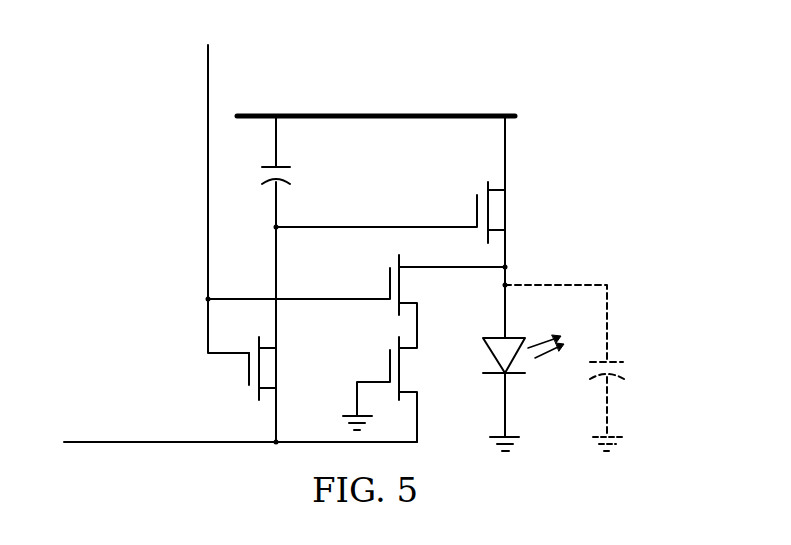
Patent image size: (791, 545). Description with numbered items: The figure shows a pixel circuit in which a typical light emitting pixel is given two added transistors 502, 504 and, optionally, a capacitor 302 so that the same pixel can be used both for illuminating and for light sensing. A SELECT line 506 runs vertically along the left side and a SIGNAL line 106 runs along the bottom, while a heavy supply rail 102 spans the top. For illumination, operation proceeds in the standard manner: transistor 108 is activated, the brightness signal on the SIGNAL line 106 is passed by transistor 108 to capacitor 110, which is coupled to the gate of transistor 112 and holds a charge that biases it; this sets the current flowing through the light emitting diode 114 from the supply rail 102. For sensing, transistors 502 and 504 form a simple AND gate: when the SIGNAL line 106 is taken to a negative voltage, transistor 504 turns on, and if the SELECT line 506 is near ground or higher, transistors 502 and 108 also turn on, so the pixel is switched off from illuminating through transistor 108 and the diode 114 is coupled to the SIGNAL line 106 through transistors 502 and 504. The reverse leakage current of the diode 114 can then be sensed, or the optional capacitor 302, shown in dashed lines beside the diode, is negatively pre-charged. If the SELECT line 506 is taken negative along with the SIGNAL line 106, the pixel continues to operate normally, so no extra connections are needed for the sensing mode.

The supply rail 102 is at (487, 115).
The signal line 106 is at (89, 443).
The transistor 108 is at (273, 367).
The capacitor 110 is at (300, 176).
The transistor 112 is at (503, 213).
The light emitting diode 114 is at (512, 338).
The capacitor 302 is at (608, 362).
The transistor 502 is at (397, 263).
The transistor 504 is at (413, 362).
The select line 506 is at (208, 60).